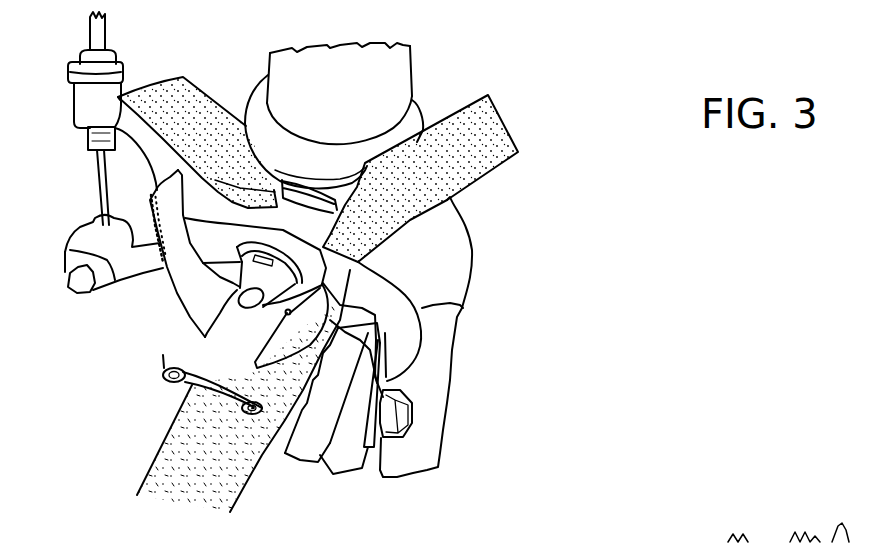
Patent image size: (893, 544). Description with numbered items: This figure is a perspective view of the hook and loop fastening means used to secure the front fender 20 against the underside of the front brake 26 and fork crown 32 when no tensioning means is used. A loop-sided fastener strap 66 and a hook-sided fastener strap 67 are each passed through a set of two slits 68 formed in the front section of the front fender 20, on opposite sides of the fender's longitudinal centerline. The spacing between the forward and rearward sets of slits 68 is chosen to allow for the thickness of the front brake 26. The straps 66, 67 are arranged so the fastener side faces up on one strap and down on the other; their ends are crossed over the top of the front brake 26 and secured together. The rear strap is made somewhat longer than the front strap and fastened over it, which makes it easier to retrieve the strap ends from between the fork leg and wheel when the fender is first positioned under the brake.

The front fender 20 is at (203, 352).
The front brake 26 is at (400, 323).
The fork crown 32 is at (427, 228).
The loop-sided fastener strap 66 is at (200, 289).
The hook-sided fastener strap 67 is at (455, 174).
The slits 68 is at (205, 338).